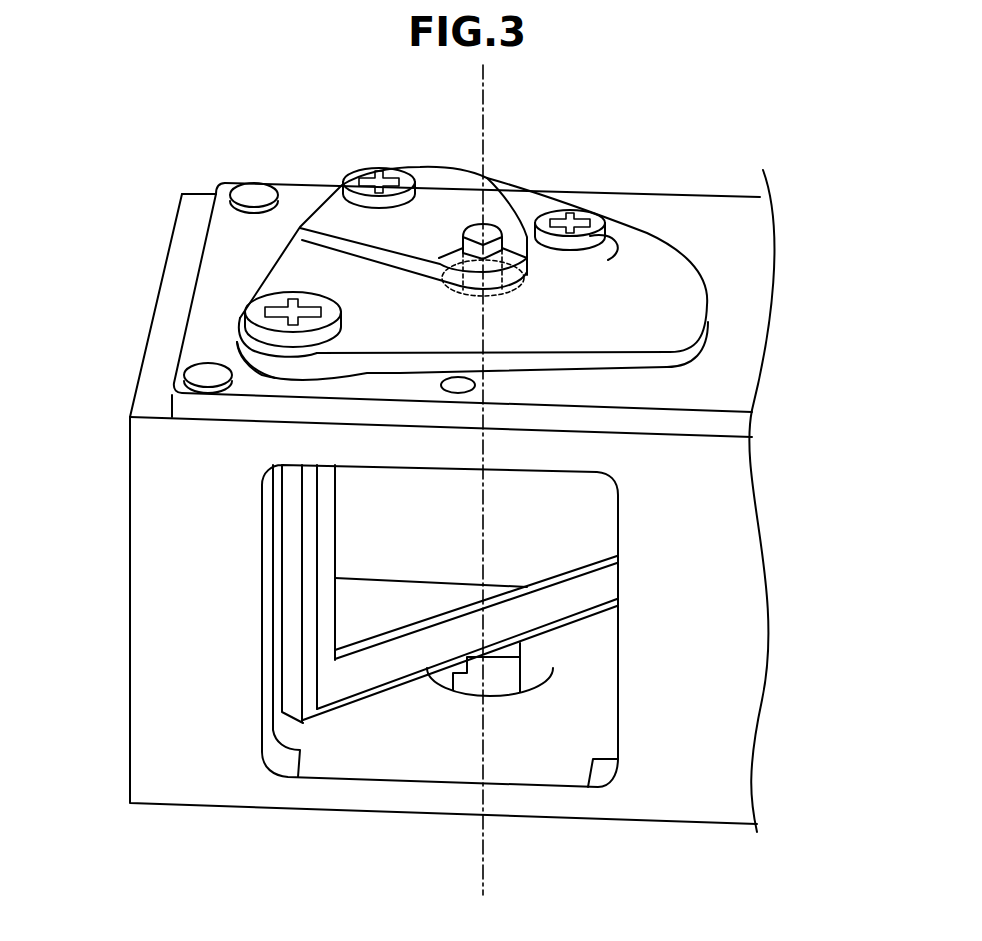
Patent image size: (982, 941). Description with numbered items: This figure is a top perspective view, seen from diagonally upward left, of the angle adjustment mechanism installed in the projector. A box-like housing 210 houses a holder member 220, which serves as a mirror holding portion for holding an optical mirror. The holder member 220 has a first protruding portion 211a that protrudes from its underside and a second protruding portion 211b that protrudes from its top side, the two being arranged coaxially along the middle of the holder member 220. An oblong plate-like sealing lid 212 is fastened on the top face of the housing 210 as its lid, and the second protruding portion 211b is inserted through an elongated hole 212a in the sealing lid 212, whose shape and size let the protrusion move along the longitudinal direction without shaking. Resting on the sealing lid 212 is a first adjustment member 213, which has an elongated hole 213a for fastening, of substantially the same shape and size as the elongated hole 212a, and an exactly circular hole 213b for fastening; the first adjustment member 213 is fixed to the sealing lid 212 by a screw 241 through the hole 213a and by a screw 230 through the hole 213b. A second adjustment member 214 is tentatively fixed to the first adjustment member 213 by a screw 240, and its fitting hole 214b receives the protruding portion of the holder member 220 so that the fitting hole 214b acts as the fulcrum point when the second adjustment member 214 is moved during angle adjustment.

The housing 210 is at (723, 700).
The first protruding portion 211a is at (497, 682).
The second protruding portion 211b is at (496, 233).
The sealing lid 212 is at (730, 369).
The elongated hole 212a is at (512, 301).
The first adjustment member 213 is at (670, 290).
The hole for fastening 213a is at (606, 260).
The hole for fastening 213b is at (318, 352).
The second adjustment member 214 is at (445, 183).
The fitting hole 214b is at (476, 255).
The holder member 220 is at (606, 580).
The screw 230 is at (255, 303).
The screw 240 is at (393, 172).
The screw 241 is at (593, 221).